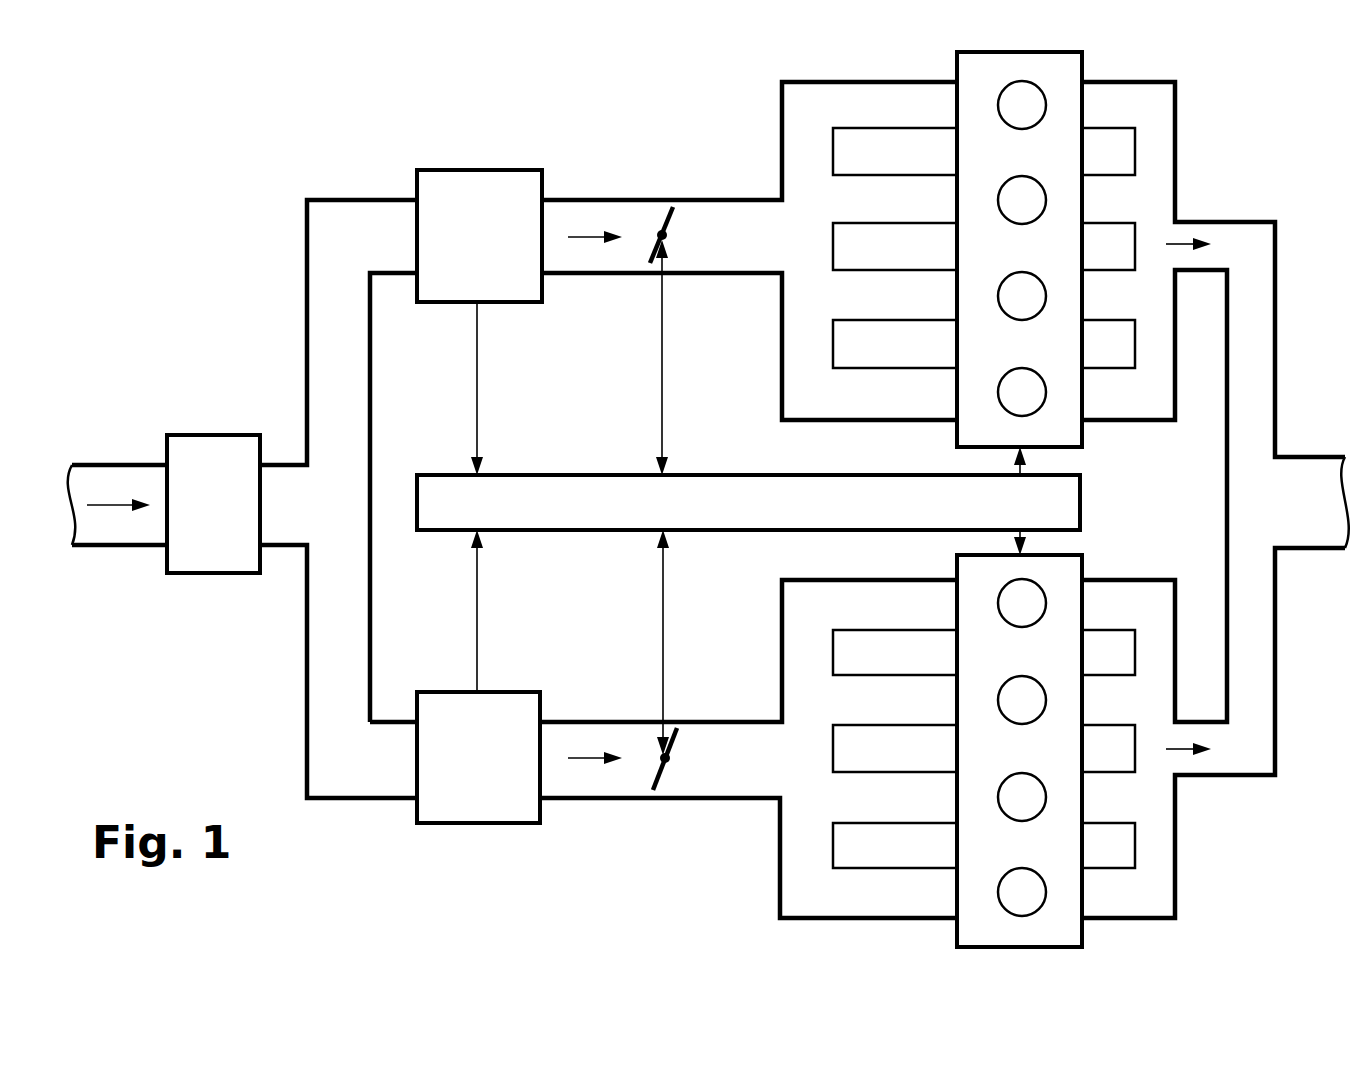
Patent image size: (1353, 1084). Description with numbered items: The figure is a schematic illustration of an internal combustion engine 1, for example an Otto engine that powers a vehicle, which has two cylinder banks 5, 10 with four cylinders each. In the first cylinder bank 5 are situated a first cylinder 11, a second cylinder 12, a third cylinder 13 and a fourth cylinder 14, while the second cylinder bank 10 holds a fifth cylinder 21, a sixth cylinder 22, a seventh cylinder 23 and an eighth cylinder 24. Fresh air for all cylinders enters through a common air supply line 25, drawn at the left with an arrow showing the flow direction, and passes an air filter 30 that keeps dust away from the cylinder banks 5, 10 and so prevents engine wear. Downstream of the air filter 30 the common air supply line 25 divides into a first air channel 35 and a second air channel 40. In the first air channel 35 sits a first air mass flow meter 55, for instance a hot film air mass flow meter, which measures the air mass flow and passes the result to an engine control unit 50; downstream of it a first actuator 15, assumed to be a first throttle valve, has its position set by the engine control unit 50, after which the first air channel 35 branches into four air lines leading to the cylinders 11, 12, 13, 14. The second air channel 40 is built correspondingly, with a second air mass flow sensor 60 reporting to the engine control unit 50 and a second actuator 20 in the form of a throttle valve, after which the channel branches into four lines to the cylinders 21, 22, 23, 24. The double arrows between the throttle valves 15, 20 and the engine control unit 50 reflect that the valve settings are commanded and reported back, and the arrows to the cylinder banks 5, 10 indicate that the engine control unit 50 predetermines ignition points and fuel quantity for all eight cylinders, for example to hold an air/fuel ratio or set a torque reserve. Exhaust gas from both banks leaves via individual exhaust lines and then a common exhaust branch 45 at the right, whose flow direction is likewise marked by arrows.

The internal combustion engine 1 is at (148, 180).
The first cylinder bank 5 is at (984, 260).
The second cylinder bank 10 is at (984, 738).
The first cylinder 11 is at (1006, 122).
The second cylinder 12 is at (1006, 218).
The third cylinder 13 is at (1006, 314).
The fourth cylinder 14 is at (1006, 411).
The first actuator 15 is at (660, 215).
The second actuator 20 is at (676, 740).
The fifth cylinder 21 is at (1040, 620).
The sixth cylinder 22 is at (1040, 717).
The seventh cylinder 23 is at (1040, 814).
The eighth cylinder 24 is at (1040, 909).
The common air supply line 25 is at (113, 478).
The air filter 30 is at (213, 434).
The first air channel 35 is at (388, 208).
The second air channel 40 is at (380, 790).
The common exhaust branch 45 is at (1311, 551).
The engine control unit 50 is at (728, 473).
The first air mass flow meter 55 is at (477, 168).
The second air mass flow sensor 60 is at (477, 825).